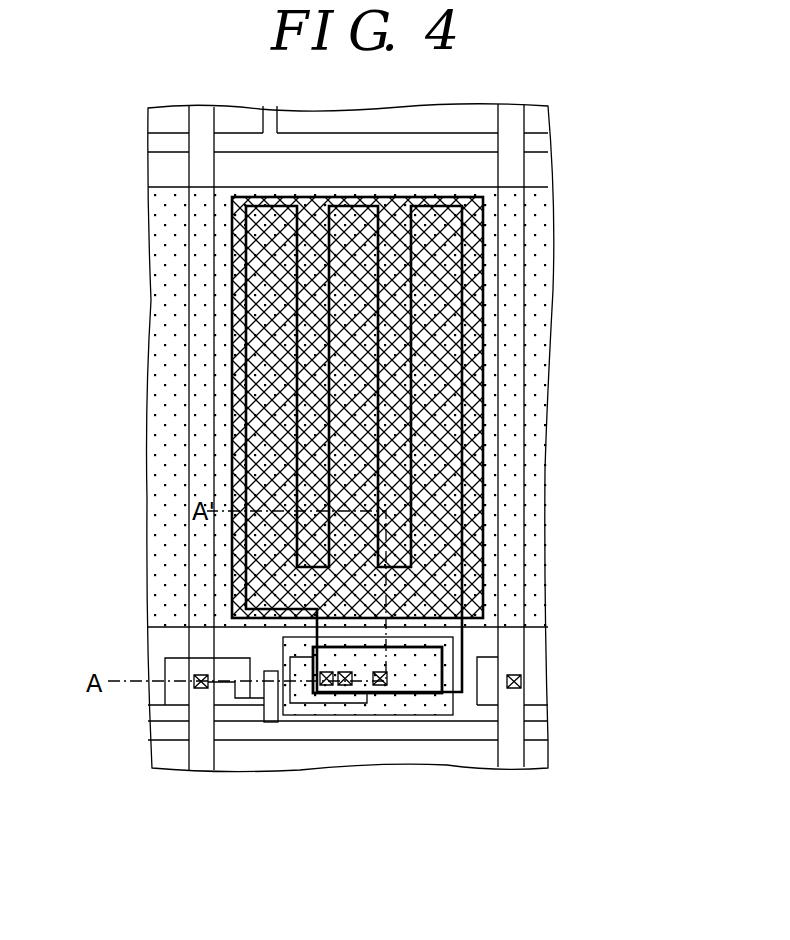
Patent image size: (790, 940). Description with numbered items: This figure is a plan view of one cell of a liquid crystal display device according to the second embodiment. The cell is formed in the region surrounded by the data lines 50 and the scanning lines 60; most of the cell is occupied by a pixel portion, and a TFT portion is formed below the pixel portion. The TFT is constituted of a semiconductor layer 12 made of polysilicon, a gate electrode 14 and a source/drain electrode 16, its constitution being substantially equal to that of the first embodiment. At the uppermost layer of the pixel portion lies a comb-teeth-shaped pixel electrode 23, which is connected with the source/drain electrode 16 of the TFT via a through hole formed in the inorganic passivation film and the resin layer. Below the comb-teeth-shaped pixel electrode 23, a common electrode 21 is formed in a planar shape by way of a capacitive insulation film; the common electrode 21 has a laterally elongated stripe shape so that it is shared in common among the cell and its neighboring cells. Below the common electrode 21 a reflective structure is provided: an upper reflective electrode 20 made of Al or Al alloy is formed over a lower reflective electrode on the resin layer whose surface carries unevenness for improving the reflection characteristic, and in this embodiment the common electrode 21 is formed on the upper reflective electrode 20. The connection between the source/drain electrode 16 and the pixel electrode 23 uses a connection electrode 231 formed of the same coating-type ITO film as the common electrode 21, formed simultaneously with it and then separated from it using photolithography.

The semiconductor layer 12 is at (238, 705).
The gate electrode 14 is at (275, 682).
The source/drain electrode 16 is at (407, 705).
The upper reflective electrode 20 is at (483, 293).
The common electrode 21 is at (533, 450).
The pixel electrode 23 is at (473, 350).
The data line 50 is at (202, 758).
The scanning line 60 is at (160, 732).
The connection electrode 231 is at (433, 713).